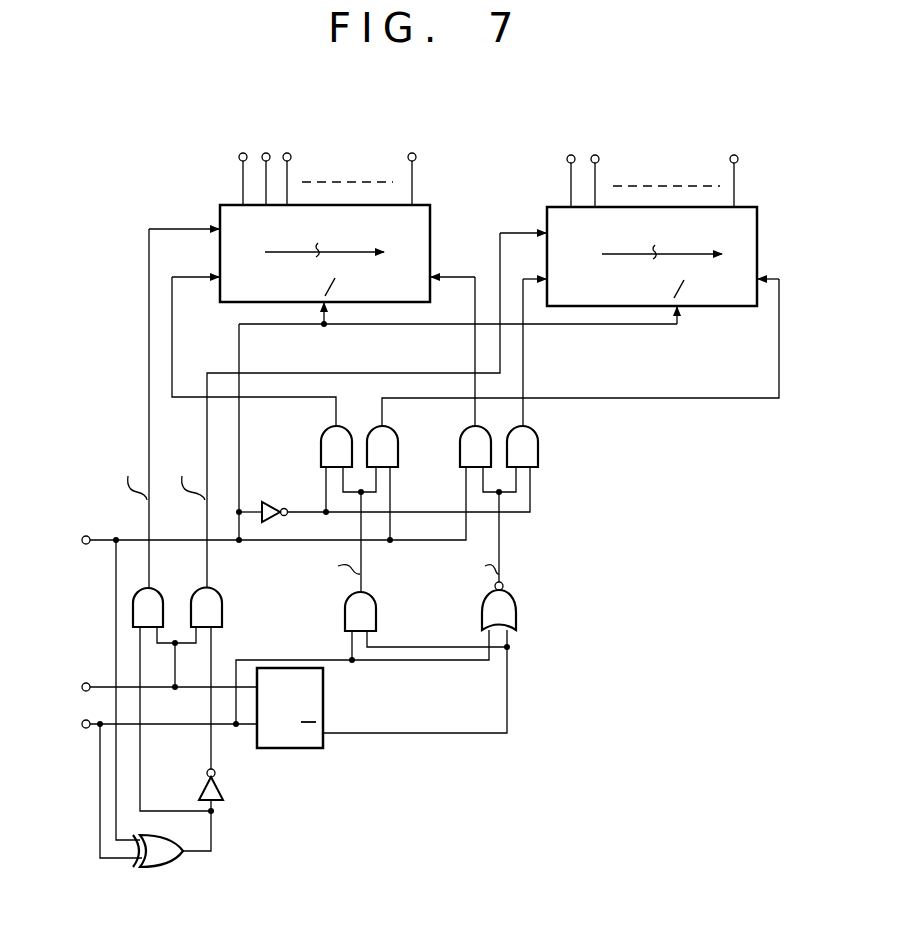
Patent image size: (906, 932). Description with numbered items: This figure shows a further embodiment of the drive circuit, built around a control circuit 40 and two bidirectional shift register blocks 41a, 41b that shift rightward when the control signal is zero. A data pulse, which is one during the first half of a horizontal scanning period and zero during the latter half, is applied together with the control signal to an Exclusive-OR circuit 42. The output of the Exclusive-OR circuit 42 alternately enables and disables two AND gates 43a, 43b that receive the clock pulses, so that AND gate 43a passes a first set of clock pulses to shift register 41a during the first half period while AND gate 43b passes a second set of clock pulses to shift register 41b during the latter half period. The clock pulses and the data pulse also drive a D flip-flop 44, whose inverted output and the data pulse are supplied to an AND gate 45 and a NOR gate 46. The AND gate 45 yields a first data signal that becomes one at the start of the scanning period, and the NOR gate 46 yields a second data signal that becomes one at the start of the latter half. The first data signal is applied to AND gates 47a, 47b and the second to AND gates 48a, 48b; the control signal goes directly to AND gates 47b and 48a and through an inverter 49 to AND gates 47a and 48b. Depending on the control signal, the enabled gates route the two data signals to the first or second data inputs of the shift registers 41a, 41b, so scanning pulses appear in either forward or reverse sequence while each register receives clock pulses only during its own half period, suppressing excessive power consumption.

The control circuit 40 is at (293, 618).
The bidirectional shift register block 41a is at (431, 217).
The bidirectional shift register block 41b is at (758, 221).
The Exclusive-OR circuit 42 is at (155, 869).
The AND gate 43a is at (160, 602).
The AND gate 43b is at (225, 602).
The D flip-flop 44 is at (285, 750).
The AND gate 45 is at (377, 605).
The NOR gate 46 is at (516, 605).
The AND gate 47a is at (320, 452).
The AND gate 47b is at (400, 453).
The AND gate 48a is at (459, 448).
The AND gate 48b is at (541, 453).
The inverter 49 is at (267, 508).